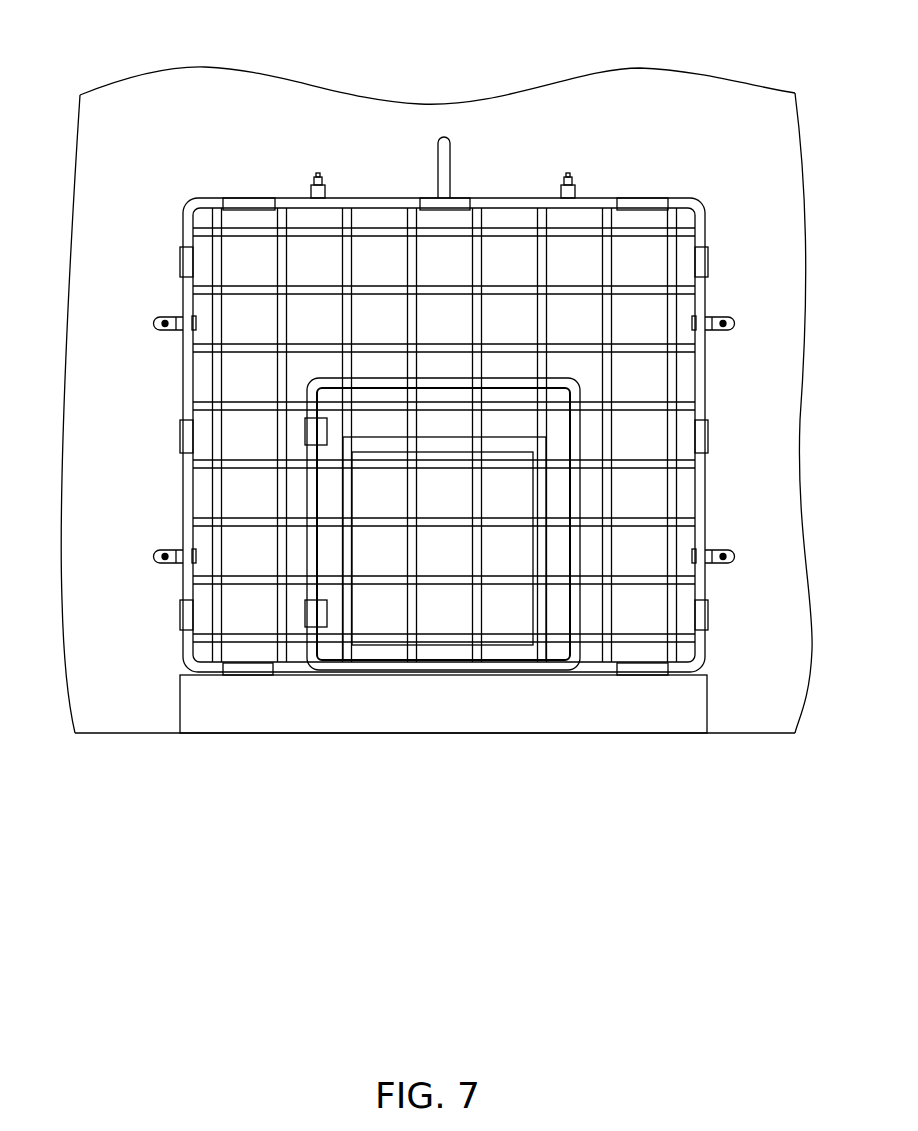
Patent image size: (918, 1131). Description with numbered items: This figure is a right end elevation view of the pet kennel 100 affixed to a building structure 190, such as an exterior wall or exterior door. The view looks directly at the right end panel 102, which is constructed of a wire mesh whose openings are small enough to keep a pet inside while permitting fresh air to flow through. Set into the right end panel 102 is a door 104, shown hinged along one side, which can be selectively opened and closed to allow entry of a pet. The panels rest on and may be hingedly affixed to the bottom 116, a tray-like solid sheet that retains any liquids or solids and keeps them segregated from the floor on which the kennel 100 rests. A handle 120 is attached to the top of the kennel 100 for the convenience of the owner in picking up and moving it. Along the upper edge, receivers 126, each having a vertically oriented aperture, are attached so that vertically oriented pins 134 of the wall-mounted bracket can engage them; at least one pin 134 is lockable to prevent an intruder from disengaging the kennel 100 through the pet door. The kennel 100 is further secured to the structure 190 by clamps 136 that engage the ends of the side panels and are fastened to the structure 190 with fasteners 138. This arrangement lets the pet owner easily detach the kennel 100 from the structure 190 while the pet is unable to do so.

The pet kennel 100 is at (690, 172).
The right end panel 102 is at (255, 580).
The door 104 is at (443, 580).
The bottom 116 is at (707, 703).
The handle 120 is at (437, 160).
The receiver 126 is at (311, 186).
The pin 134 is at (321, 175).
The clamp 136 is at (170, 316).
The fastener 138 is at (157, 331).
The building structure 190 is at (210, 67).